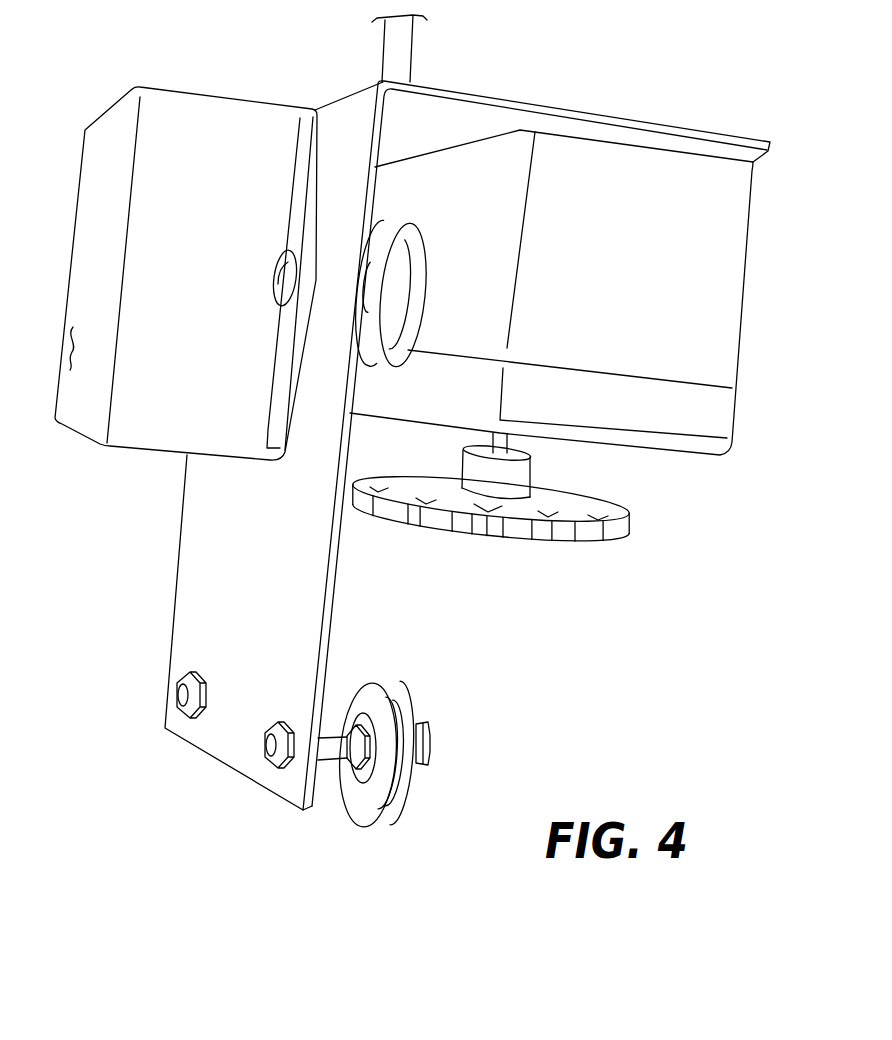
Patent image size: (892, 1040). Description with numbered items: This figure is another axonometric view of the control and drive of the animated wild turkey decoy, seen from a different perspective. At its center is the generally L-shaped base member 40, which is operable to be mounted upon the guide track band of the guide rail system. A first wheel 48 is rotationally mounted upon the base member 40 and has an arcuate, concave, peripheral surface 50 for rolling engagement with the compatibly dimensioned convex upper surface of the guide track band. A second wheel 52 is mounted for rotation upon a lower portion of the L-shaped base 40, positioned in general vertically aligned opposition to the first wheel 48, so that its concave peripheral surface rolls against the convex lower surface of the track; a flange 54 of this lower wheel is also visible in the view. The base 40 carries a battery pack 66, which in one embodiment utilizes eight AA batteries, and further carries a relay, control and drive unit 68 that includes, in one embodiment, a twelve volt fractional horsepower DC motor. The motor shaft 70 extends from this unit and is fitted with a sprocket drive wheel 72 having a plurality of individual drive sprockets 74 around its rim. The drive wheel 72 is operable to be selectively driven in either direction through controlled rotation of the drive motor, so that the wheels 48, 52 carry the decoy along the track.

The base member 40 is at (571, 110).
The first wheel 48 is at (424, 242).
The concave peripheral surface 50 is at (386, 369).
The second wheel 52 is at (408, 693).
The lower pulley flange 54 is at (380, 816).
The battery pack 66 is at (220, 97).
The relay, control and drive unit 68 is at (742, 315).
The motor shaft 70 is at (512, 447).
The sprocket drive wheel 72 is at (491, 538).
The drive sprockets 74 is at (492, 536).